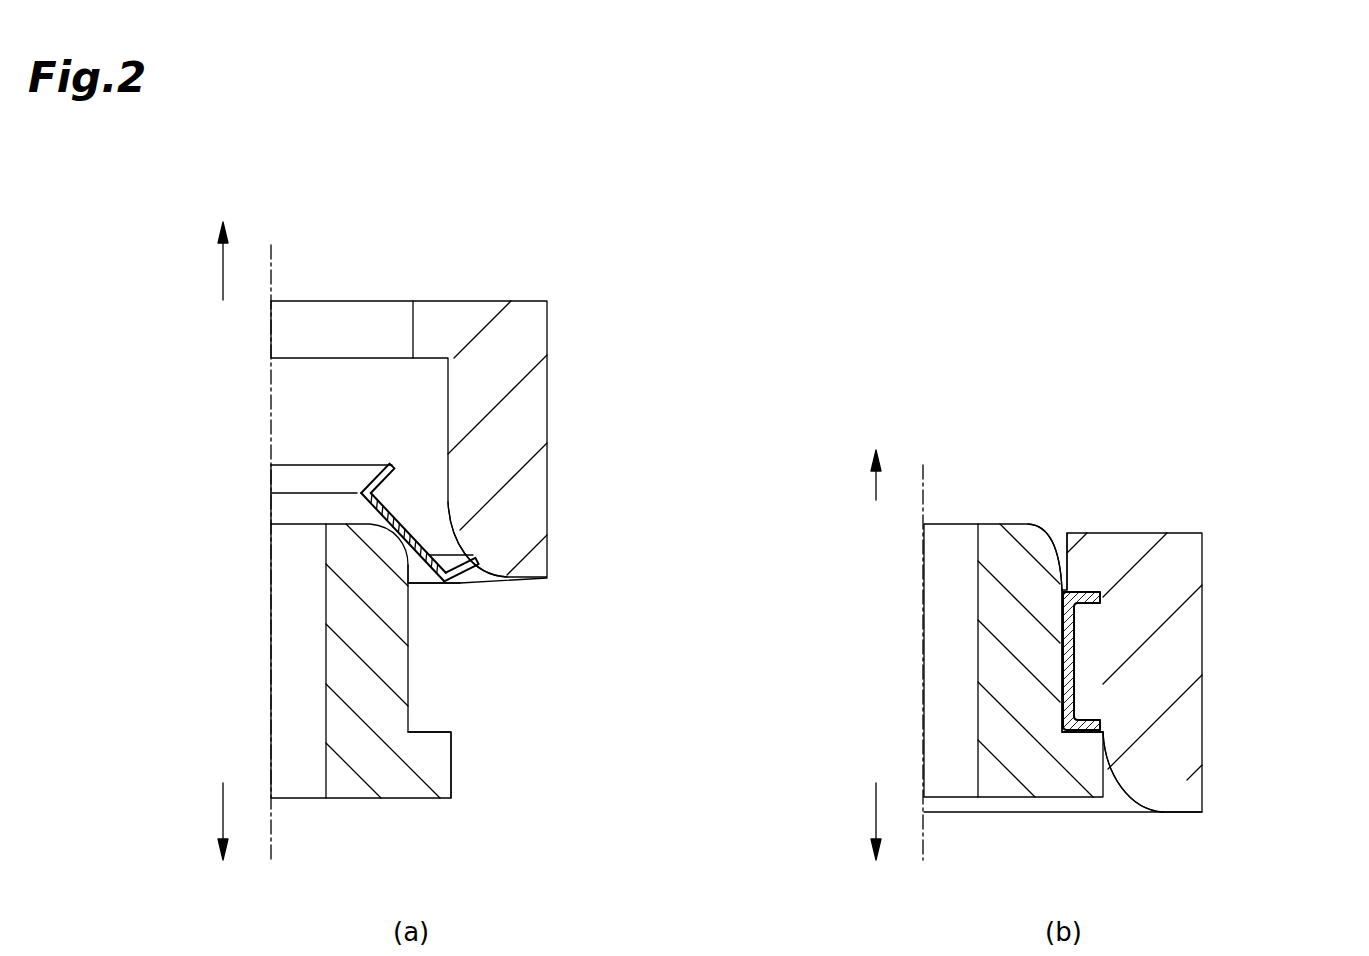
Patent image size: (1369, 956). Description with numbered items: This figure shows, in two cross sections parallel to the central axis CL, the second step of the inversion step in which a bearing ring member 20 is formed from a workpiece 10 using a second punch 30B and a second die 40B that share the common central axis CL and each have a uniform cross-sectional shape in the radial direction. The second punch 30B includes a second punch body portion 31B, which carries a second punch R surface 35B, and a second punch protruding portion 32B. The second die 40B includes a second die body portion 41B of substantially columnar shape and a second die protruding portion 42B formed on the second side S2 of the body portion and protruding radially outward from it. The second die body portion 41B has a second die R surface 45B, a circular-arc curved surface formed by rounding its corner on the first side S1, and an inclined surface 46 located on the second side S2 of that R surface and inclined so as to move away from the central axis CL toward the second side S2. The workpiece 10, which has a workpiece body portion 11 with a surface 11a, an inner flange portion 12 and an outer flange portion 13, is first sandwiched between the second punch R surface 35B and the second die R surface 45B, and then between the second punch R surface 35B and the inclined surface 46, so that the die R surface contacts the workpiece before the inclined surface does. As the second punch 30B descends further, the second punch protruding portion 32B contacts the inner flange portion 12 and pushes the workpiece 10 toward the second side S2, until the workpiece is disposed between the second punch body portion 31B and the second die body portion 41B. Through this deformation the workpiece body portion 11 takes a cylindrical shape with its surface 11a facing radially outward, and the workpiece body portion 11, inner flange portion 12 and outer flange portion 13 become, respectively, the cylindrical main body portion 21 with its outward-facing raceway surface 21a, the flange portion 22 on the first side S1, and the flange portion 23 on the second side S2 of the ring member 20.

The workpiece 10 is at (500, 527).
The workpiece body portion 11 is at (433, 575).
The surface 11a is at (425, 538).
The inner flange portion 12 is at (388, 464).
The outer flange portion 13 is at (478, 582).
The bearing ring member 20 is at (1080, 660).
The main body portion 21 is at (1073, 655).
The raceway surface 21a is at (1073, 628).
The flange portion 22 is at (1085, 597).
The flange portion 23 is at (1085, 725).
The second punch 30B is at (548, 318).
The second punch body portion 31B is at (520, 420).
The second punch protruding portion 32B is at (425, 328).
The second punch R surface 35B is at (490, 578).
The second die 40B is at (386, 800).
The second die body portion 41B is at (360, 650).
The second die protruding portion 42B is at (430, 766).
The second die R surface 45B is at (362, 497).
The inclined surface 46 is at (423, 585).
The central axis CL is at (272, 258).
The first side S1 is at (222, 264).
The second side S2 is at (222, 802).